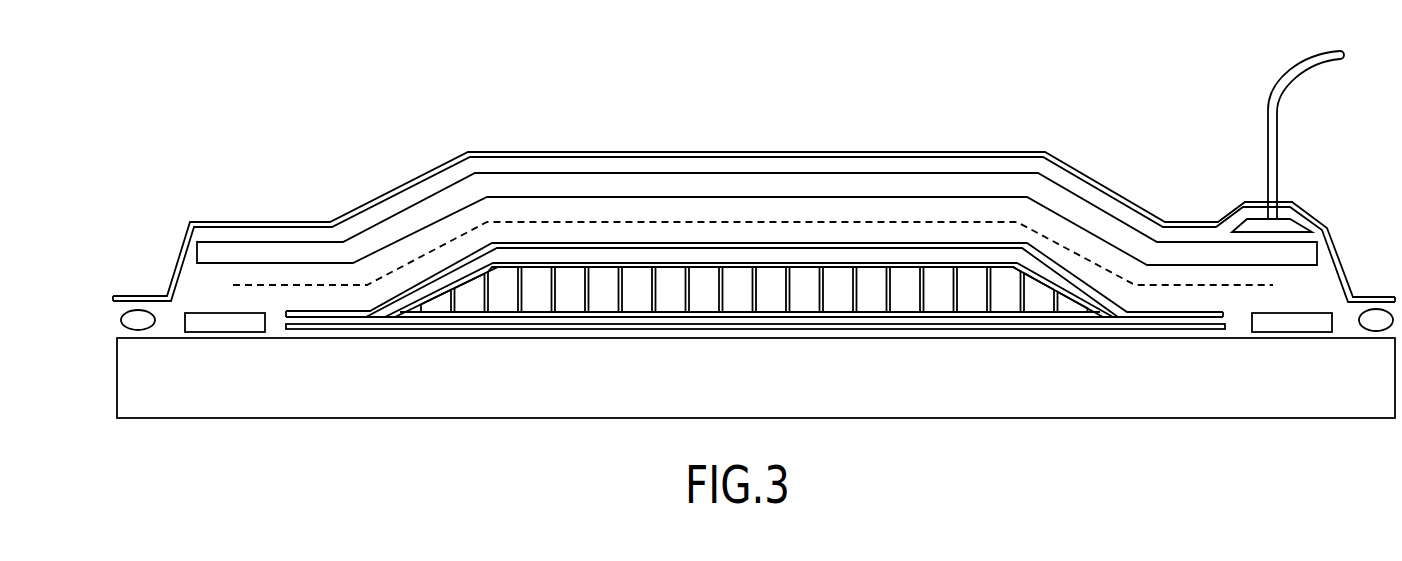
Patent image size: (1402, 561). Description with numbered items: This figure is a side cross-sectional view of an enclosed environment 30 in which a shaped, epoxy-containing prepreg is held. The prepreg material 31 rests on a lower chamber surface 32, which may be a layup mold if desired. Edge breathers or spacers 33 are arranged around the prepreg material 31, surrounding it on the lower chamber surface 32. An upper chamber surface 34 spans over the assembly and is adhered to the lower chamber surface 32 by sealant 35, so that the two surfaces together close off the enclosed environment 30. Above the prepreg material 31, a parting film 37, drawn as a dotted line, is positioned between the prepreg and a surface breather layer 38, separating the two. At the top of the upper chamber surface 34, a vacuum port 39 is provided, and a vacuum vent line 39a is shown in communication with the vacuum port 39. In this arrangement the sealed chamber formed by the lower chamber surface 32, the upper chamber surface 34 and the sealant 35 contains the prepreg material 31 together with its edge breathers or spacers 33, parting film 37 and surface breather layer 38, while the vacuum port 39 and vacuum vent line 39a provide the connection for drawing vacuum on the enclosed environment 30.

The enclosed environment 30 is at (1020, 91).
The prepreg material 31 is at (417, 306).
The lower chamber surface 32 is at (1017, 392).
The edge breathers or spacers 33 is at (231, 330).
The upper chamber surface 34 is at (641, 146).
The sealant 35 is at (150, 331).
The parting film 37 is at (305, 278).
The surface breather layer 38 is at (443, 184).
The vacuum port 39 is at (1262, 218).
The vacuum vent line 39a is at (1268, 117).